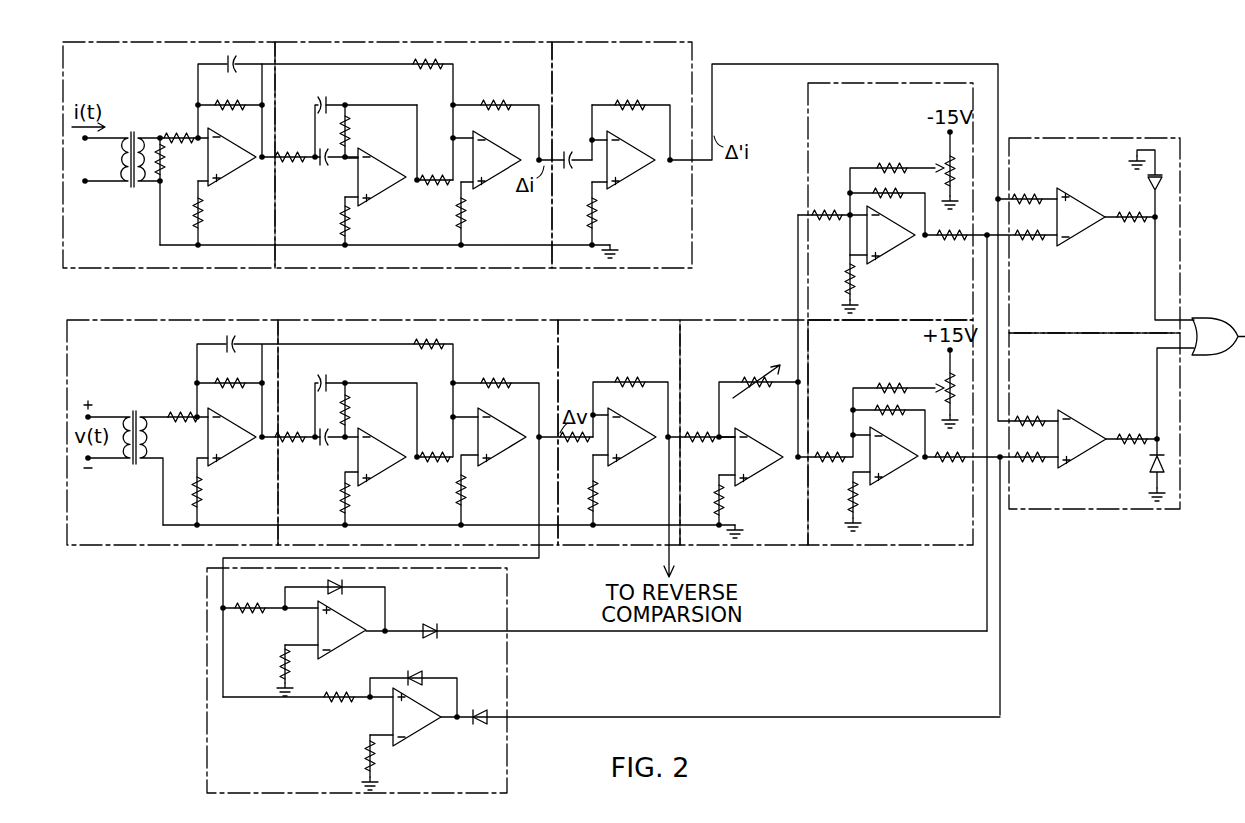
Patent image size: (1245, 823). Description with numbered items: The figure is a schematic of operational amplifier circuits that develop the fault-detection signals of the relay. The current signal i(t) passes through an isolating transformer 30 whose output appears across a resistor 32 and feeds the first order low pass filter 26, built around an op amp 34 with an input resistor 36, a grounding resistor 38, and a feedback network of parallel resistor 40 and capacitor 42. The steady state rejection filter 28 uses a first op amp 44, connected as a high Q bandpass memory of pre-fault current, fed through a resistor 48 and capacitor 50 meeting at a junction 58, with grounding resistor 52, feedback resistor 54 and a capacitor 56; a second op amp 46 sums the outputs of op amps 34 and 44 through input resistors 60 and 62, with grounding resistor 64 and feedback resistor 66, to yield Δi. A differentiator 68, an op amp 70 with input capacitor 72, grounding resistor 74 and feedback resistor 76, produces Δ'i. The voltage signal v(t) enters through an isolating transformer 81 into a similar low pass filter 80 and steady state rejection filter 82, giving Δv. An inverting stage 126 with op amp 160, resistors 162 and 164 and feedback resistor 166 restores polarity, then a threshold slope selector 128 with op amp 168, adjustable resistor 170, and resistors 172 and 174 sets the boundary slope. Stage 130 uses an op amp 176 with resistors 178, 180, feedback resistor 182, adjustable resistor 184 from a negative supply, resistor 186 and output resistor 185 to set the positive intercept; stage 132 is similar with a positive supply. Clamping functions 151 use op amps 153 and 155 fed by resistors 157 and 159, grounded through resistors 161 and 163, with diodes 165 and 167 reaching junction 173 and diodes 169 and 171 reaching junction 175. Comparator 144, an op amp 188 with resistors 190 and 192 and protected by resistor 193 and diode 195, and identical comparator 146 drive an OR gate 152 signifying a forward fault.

The first order low pass filter 26 is at (105, 270).
The steady state rejection filter 28 is at (331, 270).
The isolating transformer 30 is at (133, 137).
The resistor 32 is at (163, 163).
The operational amplifier 34 is at (222, 137).
The input resistor 36 is at (188, 130).
The resistor 38 is at (206, 226).
The resistor 40 is at (224, 100).
The capacitor 42 is at (223, 62).
The first op amp 44 is at (375, 154).
The second op amp 46 is at (500, 137).
The resistor 48 is at (298, 150).
The capacitor 50 is at (337, 170).
The resistor 52 is at (357, 227).
The resistor 54 is at (360, 130).
The capacitor 56 is at (327, 100).
The junction 58 is at (312, 162).
The input resistor 60 is at (432, 57).
The input resistor 62 is at (437, 187).
The resistor 64 is at (457, 219).
The resistor 66 is at (488, 100).
The differentiator 68 is at (581, 270).
The op amp 70 is at (623, 136).
The capacitor 72 is at (562, 143).
The resistor 74 is at (586, 216).
The resistor 76 is at (613, 98).
The first order low pass filter 80 is at (228, 305).
The isolating transformer 81 is at (133, 409).
The steady state rejection filter 82 is at (437, 311).
The inverting stage 126 is at (610, 303).
The threshold slope selector 128 is at (738, 318).
The stage 130 is at (808, 88).
The stage 132 is at (938, 563).
The comparator 144 is at (1068, 138).
The comparator 146 is at (1062, 510).
The clamping functions 151 is at (207, 578).
The OR gate 152 is at (1223, 317).
The op amp 153 is at (348, 644).
The op amp 155 is at (415, 733).
The resistor 157 is at (265, 600).
The resistor 159 is at (337, 683).
The op amp 160 is at (647, 423).
The resistor 161 is at (278, 659).
The resistor 162 is at (588, 442).
The resistor 163 is at (363, 753).
The resistor 164 is at (596, 493).
The diode 165 is at (343, 604).
The feedback resistor 166 is at (628, 372).
The diode 167 is at (437, 623).
The op amp 168 is at (768, 439).
The diode 169 is at (423, 668).
The adjustable resistor 170 is at (742, 375).
The diode 171 is at (468, 702).
The resistor 172 is at (701, 432).
The junction 173 is at (980, 237).
The resistor 174 is at (712, 498).
The junction 175 is at (1002, 456).
The op amp 176 is at (892, 257).
The resistor 178 is at (833, 208).
The resistor 180 is at (843, 285).
The feedback resistor 182 is at (888, 194).
The adjustable resistor 184 is at (942, 155).
The resistor 185 is at (943, 242).
The resistor 186 is at (890, 157).
The op amp 188 is at (1075, 197).
The resistor 190 is at (1029, 196).
The resistor 192 is at (1039, 242).
The resistor 193 is at (1135, 227).
The diode 195 is at (1145, 182).